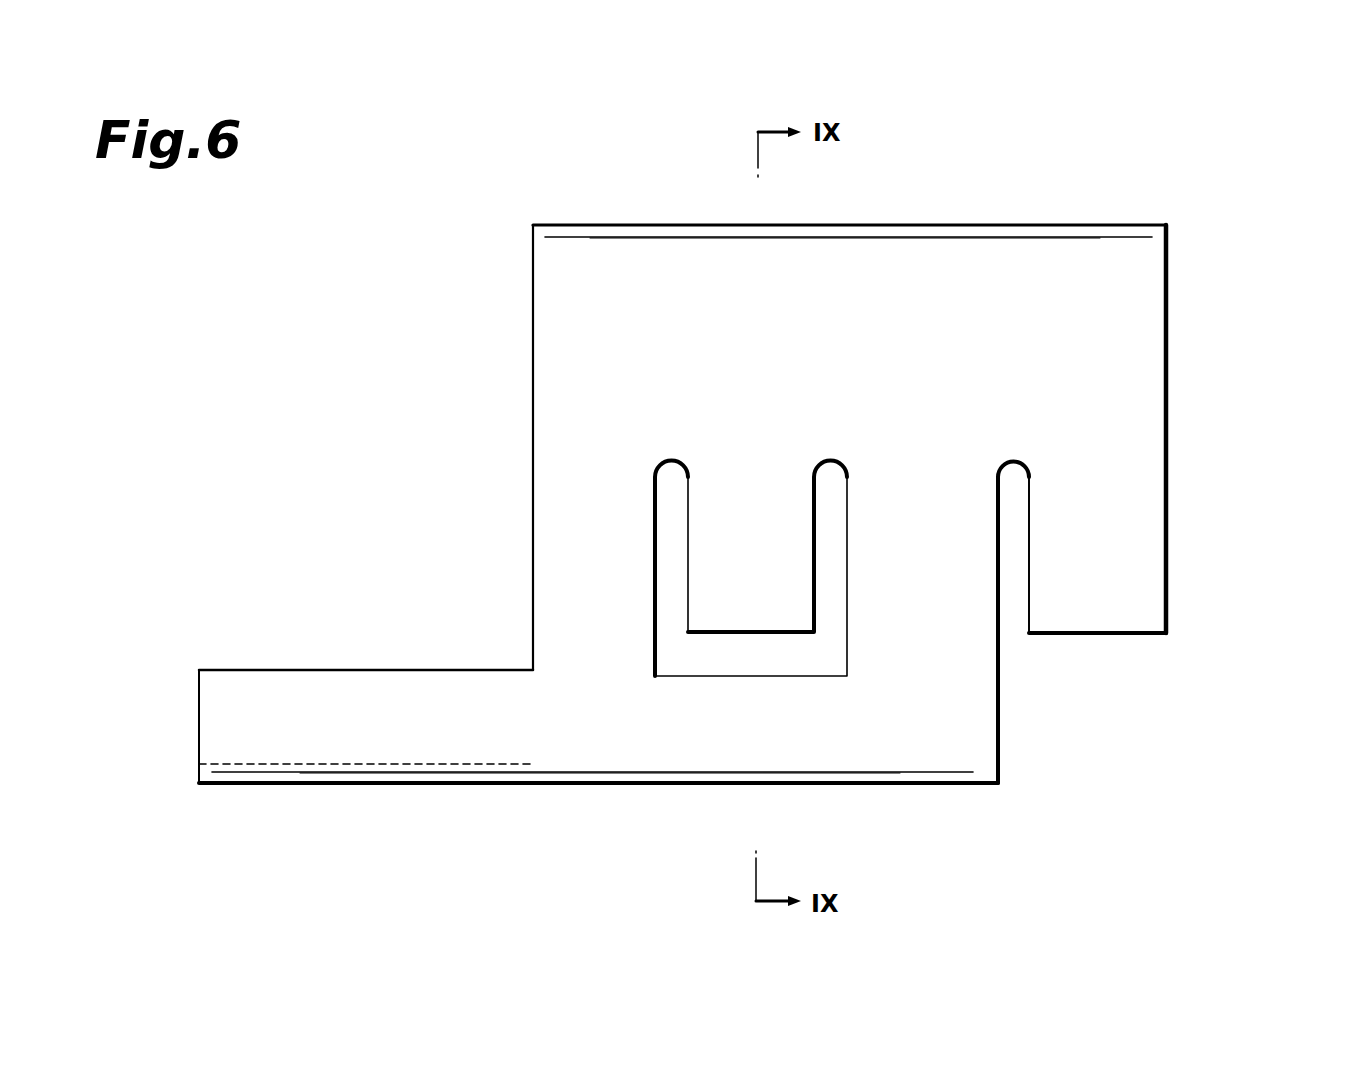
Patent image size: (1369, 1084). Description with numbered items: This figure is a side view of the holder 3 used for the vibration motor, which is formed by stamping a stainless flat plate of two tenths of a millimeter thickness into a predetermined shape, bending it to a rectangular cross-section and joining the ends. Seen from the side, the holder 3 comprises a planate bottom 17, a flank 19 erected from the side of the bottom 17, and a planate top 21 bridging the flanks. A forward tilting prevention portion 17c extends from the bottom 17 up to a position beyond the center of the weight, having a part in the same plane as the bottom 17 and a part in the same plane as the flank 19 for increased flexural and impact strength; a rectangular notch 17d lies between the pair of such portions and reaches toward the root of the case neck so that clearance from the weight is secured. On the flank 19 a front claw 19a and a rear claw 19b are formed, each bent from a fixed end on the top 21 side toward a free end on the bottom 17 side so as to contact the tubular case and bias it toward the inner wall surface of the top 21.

The holder 3 is at (1108, 206).
The planate bottom 17 is at (901, 787).
The forward tilting prevention portion 17c is at (393, 745).
The rectangular notch 17d is at (267, 770).
The flank 19 is at (533, 356).
The front claw 19a is at (745, 562).
The rear claw 19b is at (1143, 528).
The planate top 21 is at (838, 225).